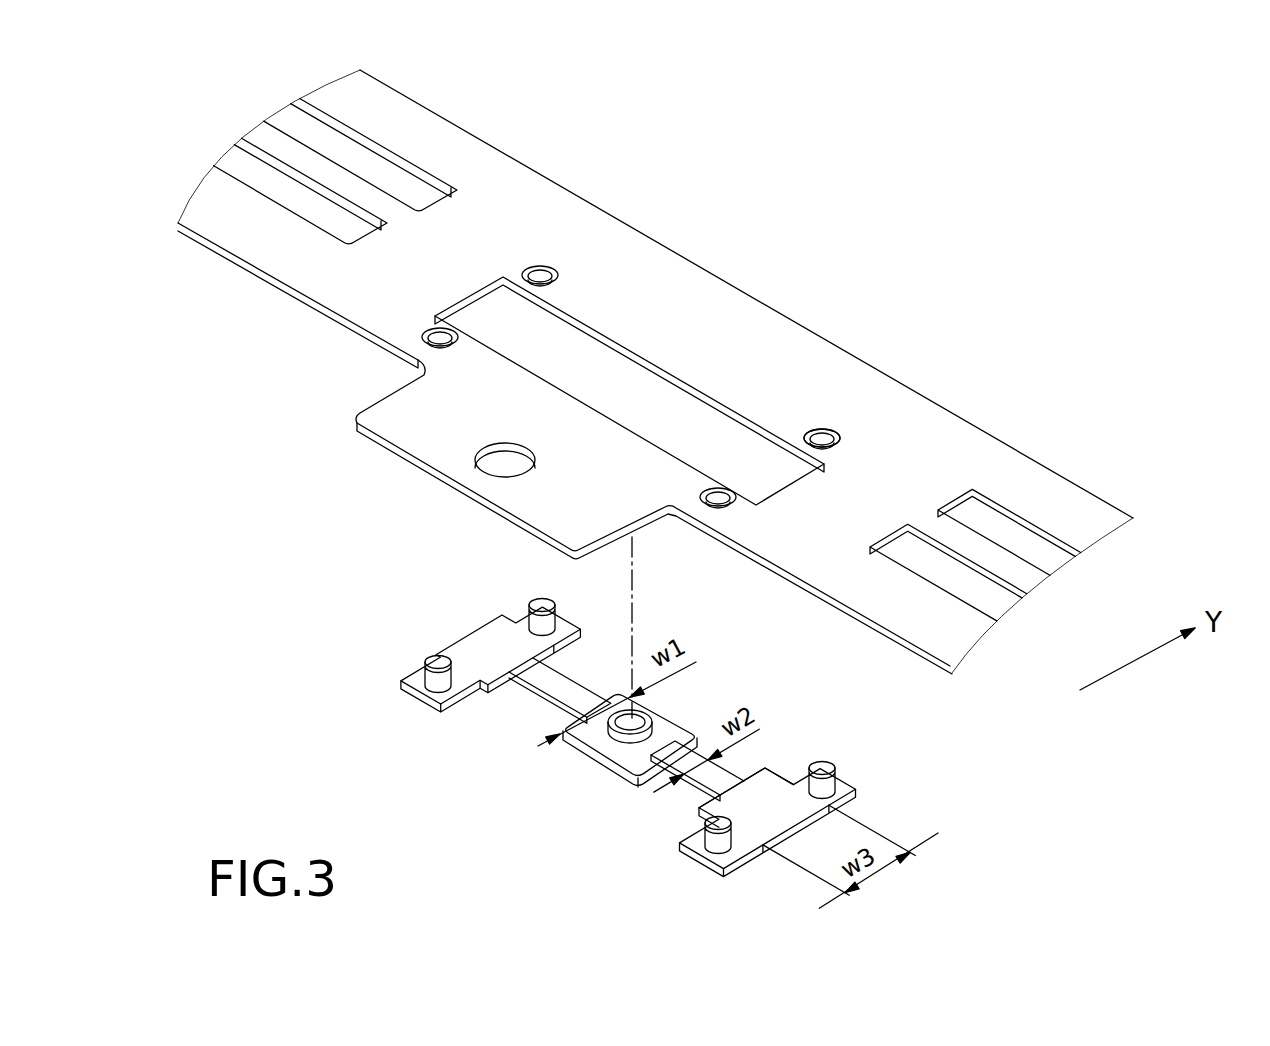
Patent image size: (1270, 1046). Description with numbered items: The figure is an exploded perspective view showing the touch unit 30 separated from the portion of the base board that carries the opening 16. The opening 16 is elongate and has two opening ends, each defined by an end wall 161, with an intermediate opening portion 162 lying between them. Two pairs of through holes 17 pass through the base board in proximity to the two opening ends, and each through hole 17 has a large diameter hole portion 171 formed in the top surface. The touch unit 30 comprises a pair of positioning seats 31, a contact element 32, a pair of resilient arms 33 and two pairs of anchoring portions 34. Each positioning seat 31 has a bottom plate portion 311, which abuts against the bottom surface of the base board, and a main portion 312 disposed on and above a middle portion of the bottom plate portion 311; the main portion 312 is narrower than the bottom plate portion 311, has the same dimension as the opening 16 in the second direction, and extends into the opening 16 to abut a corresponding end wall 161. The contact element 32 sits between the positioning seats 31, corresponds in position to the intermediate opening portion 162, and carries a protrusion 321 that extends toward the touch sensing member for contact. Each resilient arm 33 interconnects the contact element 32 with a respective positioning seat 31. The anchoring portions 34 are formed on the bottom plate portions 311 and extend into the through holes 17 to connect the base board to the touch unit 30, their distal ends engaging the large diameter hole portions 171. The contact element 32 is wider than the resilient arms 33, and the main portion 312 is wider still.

The opening 16 is at (655, 372).
The intermediate opening portion 162 is at (607, 375).
The end walls 161 is at (487, 282).
The through holes 17 is at (420, 337).
The large diameter hole portion 171 is at (806, 430).
The touch unit 30 is at (610, 773).
The contact element 32 is at (578, 752).
The protrusion 321 is at (640, 718).
The resilient arms 33 is at (557, 692).
The positioning seats 31 is at (597, 766).
The bottom plate portion 311 is at (703, 870).
The main portion 312 is at (757, 788).
The anchoring portions 34 is at (432, 660).